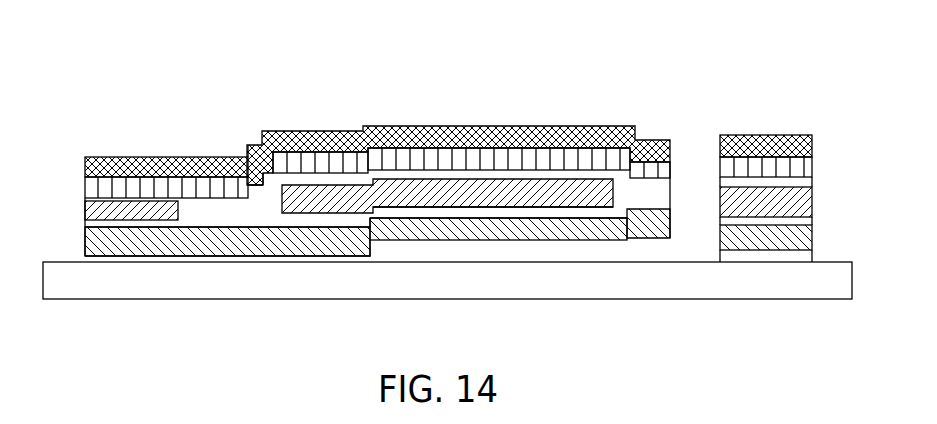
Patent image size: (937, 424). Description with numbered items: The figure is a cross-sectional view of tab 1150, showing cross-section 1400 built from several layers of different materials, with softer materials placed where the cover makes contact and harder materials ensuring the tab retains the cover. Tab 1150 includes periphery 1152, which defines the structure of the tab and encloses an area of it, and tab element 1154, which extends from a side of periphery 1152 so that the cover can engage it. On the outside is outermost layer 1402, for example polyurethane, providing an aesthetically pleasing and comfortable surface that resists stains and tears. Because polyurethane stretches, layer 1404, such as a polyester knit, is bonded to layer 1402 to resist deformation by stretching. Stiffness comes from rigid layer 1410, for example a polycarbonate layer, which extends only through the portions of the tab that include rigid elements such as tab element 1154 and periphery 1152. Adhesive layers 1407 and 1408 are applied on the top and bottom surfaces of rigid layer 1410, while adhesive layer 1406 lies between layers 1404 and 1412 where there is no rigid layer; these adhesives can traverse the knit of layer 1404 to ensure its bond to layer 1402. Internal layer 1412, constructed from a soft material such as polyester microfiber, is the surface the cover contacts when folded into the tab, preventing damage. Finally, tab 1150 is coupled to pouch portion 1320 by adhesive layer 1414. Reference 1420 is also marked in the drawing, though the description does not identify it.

The cross-section 1400 is at (667, 50).
The tab 1150 is at (307, 131).
The tab element 1154 is at (567, 127).
The adhesive layer 1407 is at (563, 180).
The periphery 1152 is at (763, 137).
The outermost layer 1402 is at (192, 165).
The adhesive layer 1406 is at (267, 200).
The layer 1404 is at (92, 188).
The internal layer 1412 is at (92, 247).
The bonding layer 1420 is at (640, 237).
The adhesive layer 1414 is at (803, 258).
The pouch portion 1320 is at (180, 292).
The adhesive layer 1408 is at (448, 209).
The rigid layer 1410 is at (548, 190).